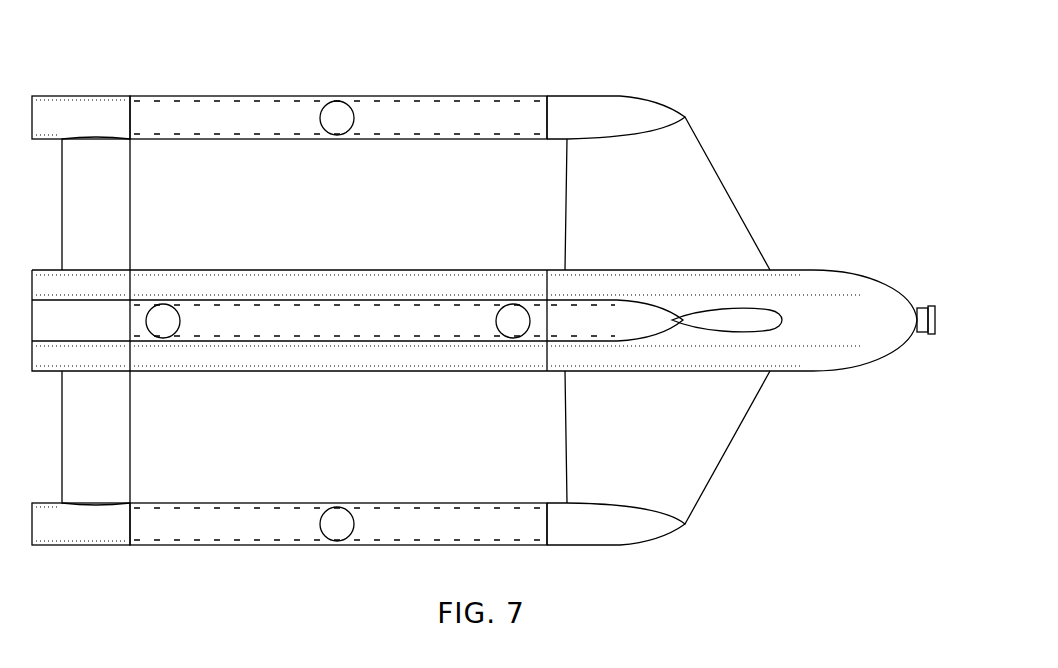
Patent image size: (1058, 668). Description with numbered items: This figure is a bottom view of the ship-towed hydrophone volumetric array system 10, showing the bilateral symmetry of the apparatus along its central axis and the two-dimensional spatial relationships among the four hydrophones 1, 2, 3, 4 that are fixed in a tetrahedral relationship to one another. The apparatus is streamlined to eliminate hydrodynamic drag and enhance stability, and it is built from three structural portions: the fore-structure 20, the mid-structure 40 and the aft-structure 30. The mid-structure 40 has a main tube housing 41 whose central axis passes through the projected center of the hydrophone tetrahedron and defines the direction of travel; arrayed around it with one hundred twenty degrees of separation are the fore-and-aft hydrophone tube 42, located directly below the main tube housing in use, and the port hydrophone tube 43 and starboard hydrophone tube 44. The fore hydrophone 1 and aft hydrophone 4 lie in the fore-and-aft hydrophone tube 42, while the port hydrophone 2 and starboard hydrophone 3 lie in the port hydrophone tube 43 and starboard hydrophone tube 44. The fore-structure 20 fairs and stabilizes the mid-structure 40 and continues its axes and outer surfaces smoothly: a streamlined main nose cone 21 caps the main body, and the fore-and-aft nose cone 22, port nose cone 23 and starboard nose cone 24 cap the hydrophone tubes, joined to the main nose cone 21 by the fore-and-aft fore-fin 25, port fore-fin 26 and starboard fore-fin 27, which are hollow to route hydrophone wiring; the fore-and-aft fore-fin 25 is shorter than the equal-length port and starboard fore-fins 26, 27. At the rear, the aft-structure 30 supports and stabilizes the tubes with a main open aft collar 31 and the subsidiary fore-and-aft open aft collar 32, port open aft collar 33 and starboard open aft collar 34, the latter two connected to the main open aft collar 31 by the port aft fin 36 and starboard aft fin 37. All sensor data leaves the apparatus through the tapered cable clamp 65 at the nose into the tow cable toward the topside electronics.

The ship-towed hydrophone volumetric array system 10 is at (882, 41).
The fore-structure 20 is at (789, 134).
The main nose cone 21 is at (834, 307).
The fore-and-aft nose cone 22 is at (581, 330).
The port nose cone 23 is at (579, 533).
The starboard nose cone 24 is at (589, 127).
The fore-and-aft fore-fin 25 is at (702, 329).
The port fore-fin 26 is at (637, 211).
The starboard fore-fin 27 is at (637, 435).
The aft-structure 30 is at (65, 64).
The main open aft collar 31 is at (69, 294).
The fore-and-aft open aft collar 32 is at (41, 330).
The port open aft collar 33 is at (59, 127).
The starboard open aft collar 34 is at (41, 533).
The port aft fin 36 is at (86, 206).
The starboard aft fin 37 is at (86, 447).
The mid-structure 40 is at (388, 66).
The main tube housing 41 is at (326, 294).
The fore-and-aft hydrophone tube 42 is at (369, 330).
The port hydrophone tube 43 is at (211, 127).
The starboard hydrophone tube 44 is at (211, 533).
The tapered cable clamp 65 is at (934, 334).
The fore hydrophone 1 is at (507, 330).
The port hydrophone 2 is at (331, 533).
The starboard hydrophone 3 is at (331, 127).
The aft hydrophone 4 is at (157, 330).